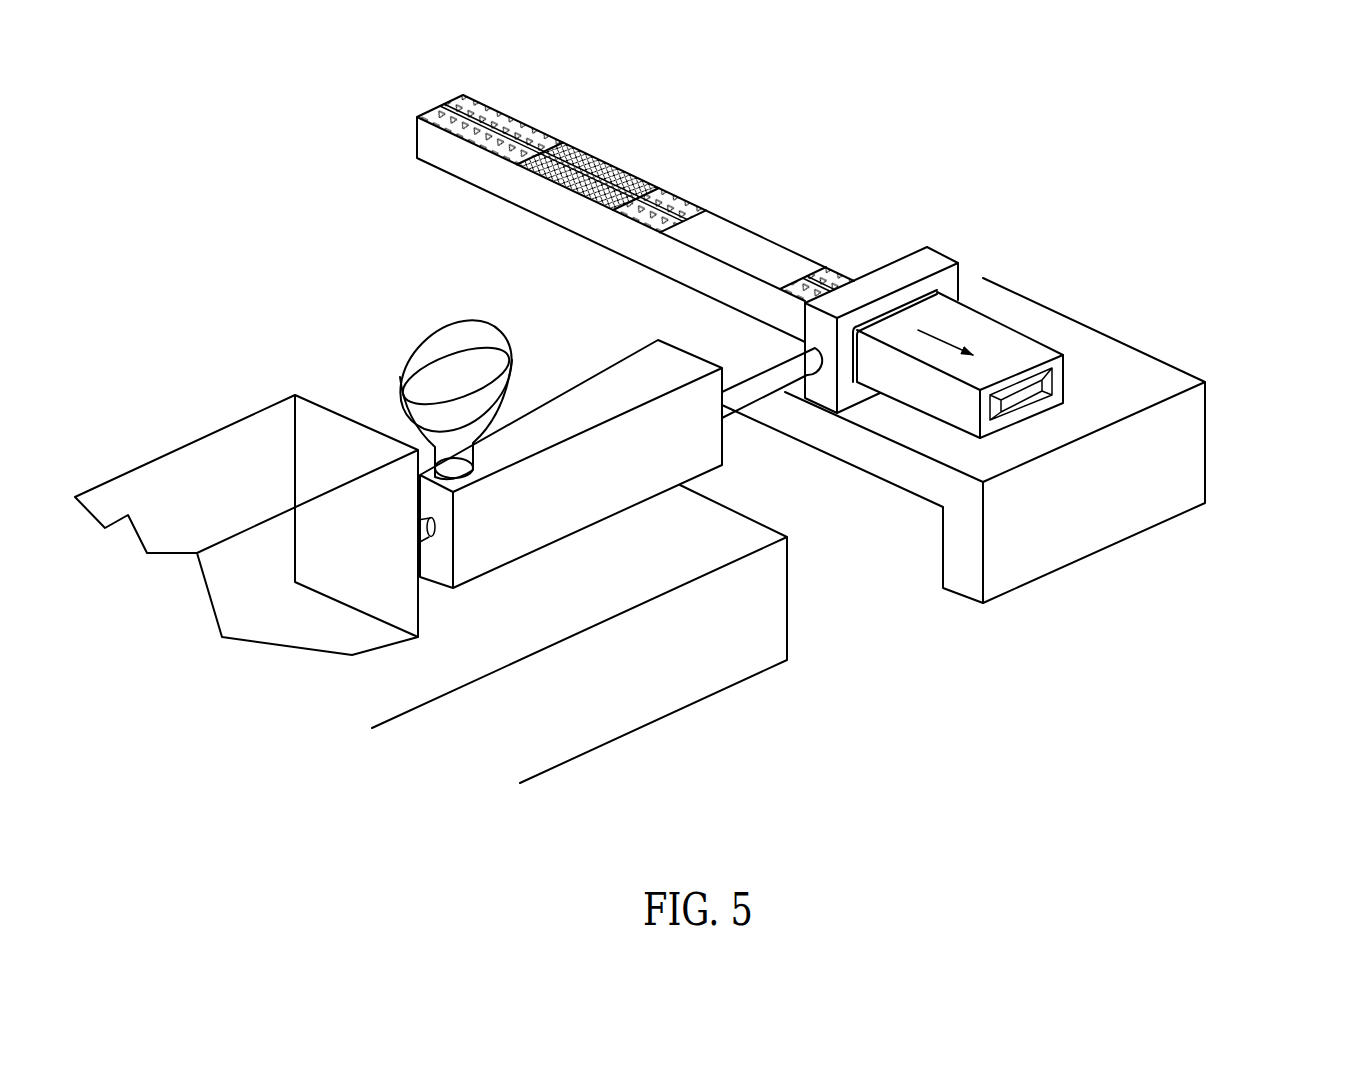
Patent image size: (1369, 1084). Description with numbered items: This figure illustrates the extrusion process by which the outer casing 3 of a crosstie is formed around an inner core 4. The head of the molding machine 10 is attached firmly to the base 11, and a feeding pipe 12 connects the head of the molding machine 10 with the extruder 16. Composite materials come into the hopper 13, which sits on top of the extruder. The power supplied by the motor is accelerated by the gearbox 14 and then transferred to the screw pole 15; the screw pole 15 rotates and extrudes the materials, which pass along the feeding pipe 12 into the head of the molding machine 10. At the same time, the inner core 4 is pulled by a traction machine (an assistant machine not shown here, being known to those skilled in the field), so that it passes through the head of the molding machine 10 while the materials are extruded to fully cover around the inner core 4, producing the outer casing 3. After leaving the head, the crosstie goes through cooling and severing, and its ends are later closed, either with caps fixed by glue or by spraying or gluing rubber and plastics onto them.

The outer casing 3 is at (1027, 366).
The inner core 4 is at (758, 248).
The head of the molding machine 10 is at (962, 262).
The base 11 is at (1135, 472).
The feeding pipe 12 is at (763, 365).
The hopper 13 is at (457, 348).
The gearbox 14 is at (233, 488).
The screw pole 15 is at (443, 533).
The extruder 16 is at (622, 682).